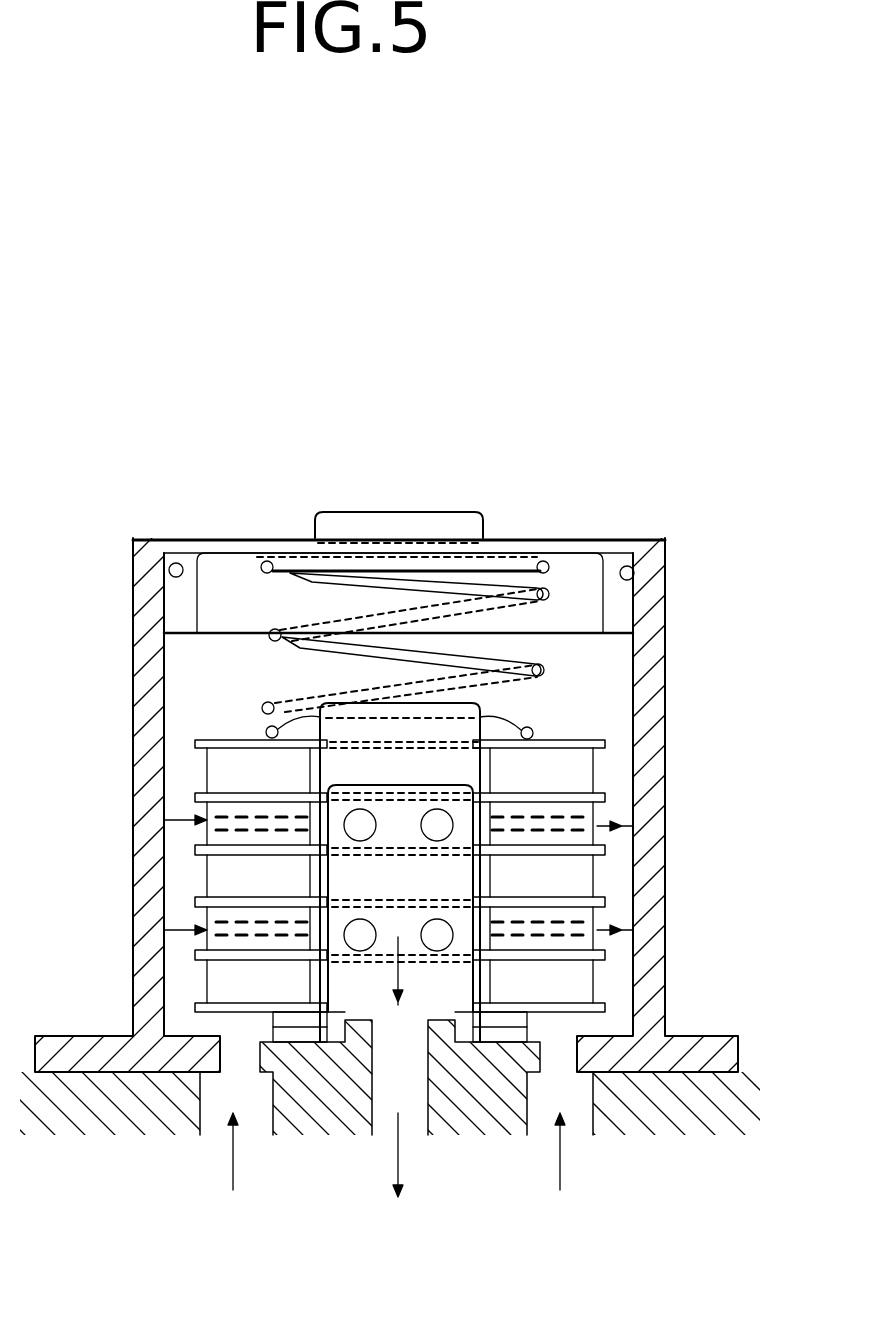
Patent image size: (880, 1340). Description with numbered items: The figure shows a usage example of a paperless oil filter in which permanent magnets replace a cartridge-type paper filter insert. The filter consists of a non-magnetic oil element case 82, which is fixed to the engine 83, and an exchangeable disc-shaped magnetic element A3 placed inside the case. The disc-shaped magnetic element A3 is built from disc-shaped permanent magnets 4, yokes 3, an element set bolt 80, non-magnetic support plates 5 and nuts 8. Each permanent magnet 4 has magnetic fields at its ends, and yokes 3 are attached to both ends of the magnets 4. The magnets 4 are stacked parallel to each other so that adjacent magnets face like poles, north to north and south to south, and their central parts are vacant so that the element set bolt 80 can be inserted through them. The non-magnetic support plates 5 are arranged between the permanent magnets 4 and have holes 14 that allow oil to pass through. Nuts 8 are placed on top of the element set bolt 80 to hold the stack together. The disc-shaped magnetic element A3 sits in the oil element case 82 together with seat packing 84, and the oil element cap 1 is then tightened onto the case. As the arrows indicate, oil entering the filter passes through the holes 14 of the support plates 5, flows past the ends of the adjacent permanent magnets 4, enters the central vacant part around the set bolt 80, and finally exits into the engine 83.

The oil element cap 1 is at (535, 538).
The nuts 8 is at (485, 728).
The yokes 3 is at (605, 740).
The disc-shaped permanent magnets 4 is at (605, 768).
The holes 14 is at (575, 833).
The non-magnetic support plates 5 is at (597, 915).
The element set bolt 80 is at (485, 975).
The oil element case 82 is at (133, 830).
The engine 83 is at (148, 1106).
The seat packing 84 is at (300, 1045).
The disc-shaped magnetic element A3 is at (213, 740).